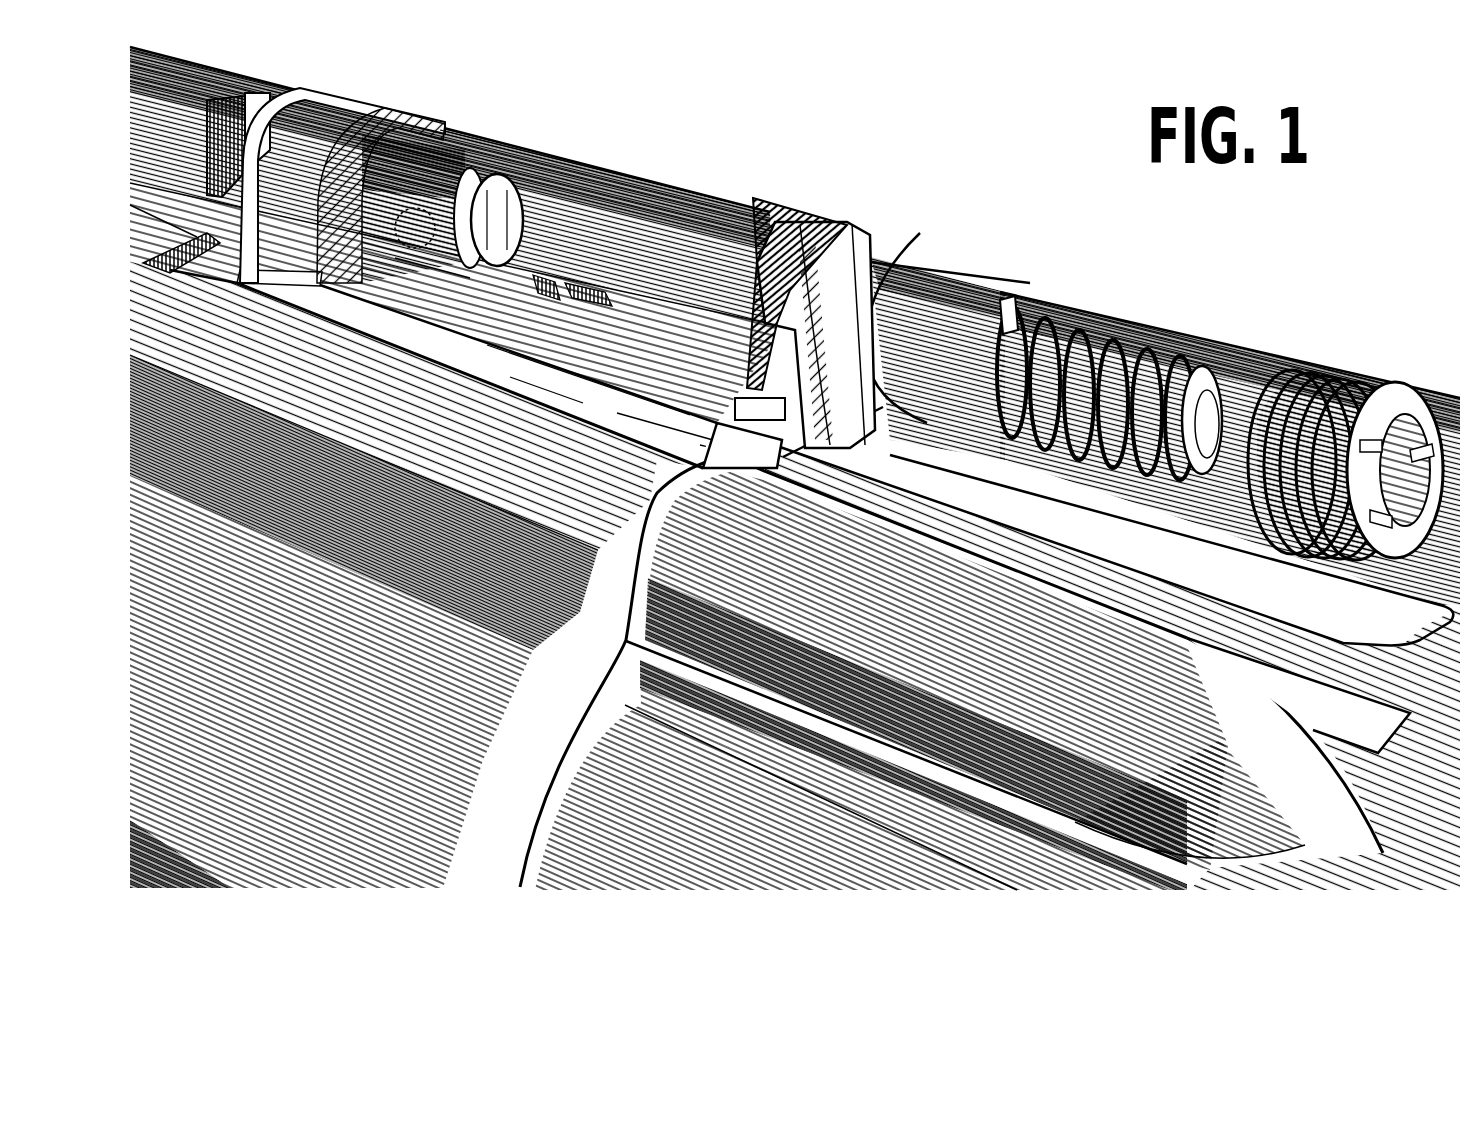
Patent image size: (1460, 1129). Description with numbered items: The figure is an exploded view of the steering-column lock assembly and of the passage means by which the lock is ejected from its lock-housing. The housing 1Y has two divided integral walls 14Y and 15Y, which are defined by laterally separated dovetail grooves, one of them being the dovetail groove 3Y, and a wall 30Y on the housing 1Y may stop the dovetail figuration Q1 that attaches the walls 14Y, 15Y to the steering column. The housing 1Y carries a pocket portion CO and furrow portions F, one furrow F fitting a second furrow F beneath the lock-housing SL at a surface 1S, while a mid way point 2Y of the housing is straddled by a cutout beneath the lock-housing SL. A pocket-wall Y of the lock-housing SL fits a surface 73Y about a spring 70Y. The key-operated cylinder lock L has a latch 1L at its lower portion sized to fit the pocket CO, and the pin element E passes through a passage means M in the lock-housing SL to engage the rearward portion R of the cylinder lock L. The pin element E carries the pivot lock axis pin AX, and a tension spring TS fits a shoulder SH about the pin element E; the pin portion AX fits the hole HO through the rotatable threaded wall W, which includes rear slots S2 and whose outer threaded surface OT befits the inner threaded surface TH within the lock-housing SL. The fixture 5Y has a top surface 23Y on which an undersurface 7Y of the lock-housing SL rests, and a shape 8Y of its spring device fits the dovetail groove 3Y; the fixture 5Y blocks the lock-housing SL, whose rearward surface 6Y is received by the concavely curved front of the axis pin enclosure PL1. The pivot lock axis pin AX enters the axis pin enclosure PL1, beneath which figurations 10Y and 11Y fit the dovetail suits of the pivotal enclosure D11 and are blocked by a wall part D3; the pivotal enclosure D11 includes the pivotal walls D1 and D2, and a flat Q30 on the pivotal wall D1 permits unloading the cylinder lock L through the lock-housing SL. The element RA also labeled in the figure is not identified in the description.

The housing 1Y is at (207, 69).
The mid way point 2Y is at (152, 172).
The dovetail groove 3Y is at (232, 292).
The fixture 5Y is at (742, 445).
The rearward surface 6Y is at (880, 245).
The undersurface 7Y is at (790, 455).
The shape 8Y is at (700, 445).
The figuration 10Y is at (633, 690).
The figuration 11Y is at (1352, 700).
The integral wall 14Y is at (416, 575).
The integral wall 15Y is at (530, 162).
The top surface 23Y is at (745, 418).
The wall 30Y is at (200, 242).
The spring 70Y is at (665, 420).
The surface 73Y is at (695, 405).
The lock-housing SL is at (392, 116).
The inner threaded surface TH is at (750, 213).
The passage means M is at (905, 265).
The shoulder SH is at (1005, 302).
The pivotal enclosure D11 is at (1162, 322).
The pivotal wall D1 is at (1247, 332).
The rotatable wall W is at (1410, 390).
The rear slots S2 is at (1418, 452).
The pin element E is at (948, 346).
The pivot lock axis pin AX is at (1102, 420).
The tension spring TS is at (1107, 458).
The outer threaded surface OT is at (1272, 465).
The hole HO is at (1402, 560).
The flat Q30 is at (1385, 608).
The wall part D3 is at (1395, 730).
The axis pin enclosure PL1 is at (1367, 830).
The dovetail figuration Q1 is at (492, 372).
The pocket-wall Y is at (560, 393).
The cylinder lock L is at (205, 100).
The rearward portion R is at (488, 218).
The furrow portion F is at (528, 294).
The pocket portion CO is at (575, 305).
The arm RA is at (370, 258).
The surface 1S is at (427, 269).
The latch 1L is at (415, 215).
The pivotal wall D2 is at (715, 830).